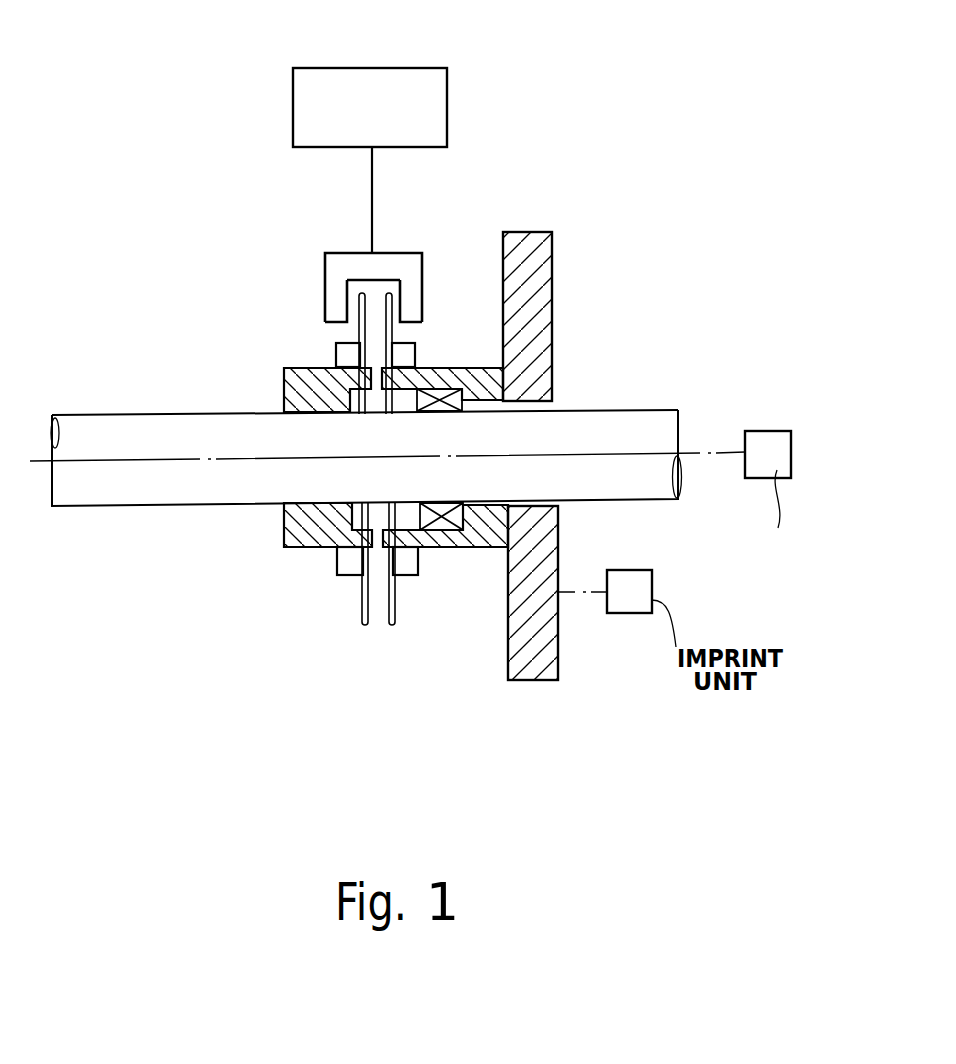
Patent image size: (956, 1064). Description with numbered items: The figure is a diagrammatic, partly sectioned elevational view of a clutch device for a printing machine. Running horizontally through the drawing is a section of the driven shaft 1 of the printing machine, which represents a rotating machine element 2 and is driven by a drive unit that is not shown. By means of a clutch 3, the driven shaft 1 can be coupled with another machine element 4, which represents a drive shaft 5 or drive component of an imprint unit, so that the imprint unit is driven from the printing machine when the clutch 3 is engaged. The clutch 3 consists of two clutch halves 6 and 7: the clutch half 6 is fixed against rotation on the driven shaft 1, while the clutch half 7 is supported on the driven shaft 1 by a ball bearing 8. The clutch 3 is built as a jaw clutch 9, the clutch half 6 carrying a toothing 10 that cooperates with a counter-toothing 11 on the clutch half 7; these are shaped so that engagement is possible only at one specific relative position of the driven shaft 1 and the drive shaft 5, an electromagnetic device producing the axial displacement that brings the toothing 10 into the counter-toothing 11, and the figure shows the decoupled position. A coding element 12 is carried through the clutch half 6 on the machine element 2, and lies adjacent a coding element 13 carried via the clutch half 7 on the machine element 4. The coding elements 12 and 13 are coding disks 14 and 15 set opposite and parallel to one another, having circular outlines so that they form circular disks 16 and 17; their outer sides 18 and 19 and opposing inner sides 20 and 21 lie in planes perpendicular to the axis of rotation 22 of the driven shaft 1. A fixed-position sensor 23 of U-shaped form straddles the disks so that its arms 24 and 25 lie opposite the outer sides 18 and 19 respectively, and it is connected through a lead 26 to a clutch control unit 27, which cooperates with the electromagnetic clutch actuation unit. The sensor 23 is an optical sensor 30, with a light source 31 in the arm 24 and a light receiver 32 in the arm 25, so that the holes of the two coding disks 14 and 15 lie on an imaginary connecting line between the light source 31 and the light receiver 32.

The driven shaft 1 is at (178, 488).
The rotating machine element 2 is at (176, 410).
The clutch 3 is at (318, 566).
The machine element 4 is at (557, 325).
The drive shaft 5 is at (540, 632).
The clutch half 6 is at (292, 372).
The clutch half 7 is at (448, 370).
The ball bearing 8 is at (440, 522).
The jaw clutch 9 is at (314, 342).
The toothing 10 is at (362, 414).
The counter-toothing 11 is at (391, 414).
The coding element 12 is at (360, 590).
The coding element 13 is at (397, 587).
The coding disk 14 is at (363, 628).
The coding disk 15 is at (395, 628).
The circular disk 16 is at (357, 604).
The circular disk 17 is at (402, 607).
The outer side 18 is at (348, 308).
The outer side 19 is at (398, 308).
The inner side 20 is at (367, 279).
The inner side 21 is at (383, 293).
The axis of rotation 22 is at (701, 451).
The sensor 23 is at (323, 271).
The arm 24 is at (336, 305).
The arm 25 is at (413, 307).
The lead 26 is at (373, 177).
The clutch control unit 27 is at (426, 93).
The optical sensor 30 is at (352, 263).
The light source 31 is at (348, 345).
The light receiver 32 is at (415, 346).